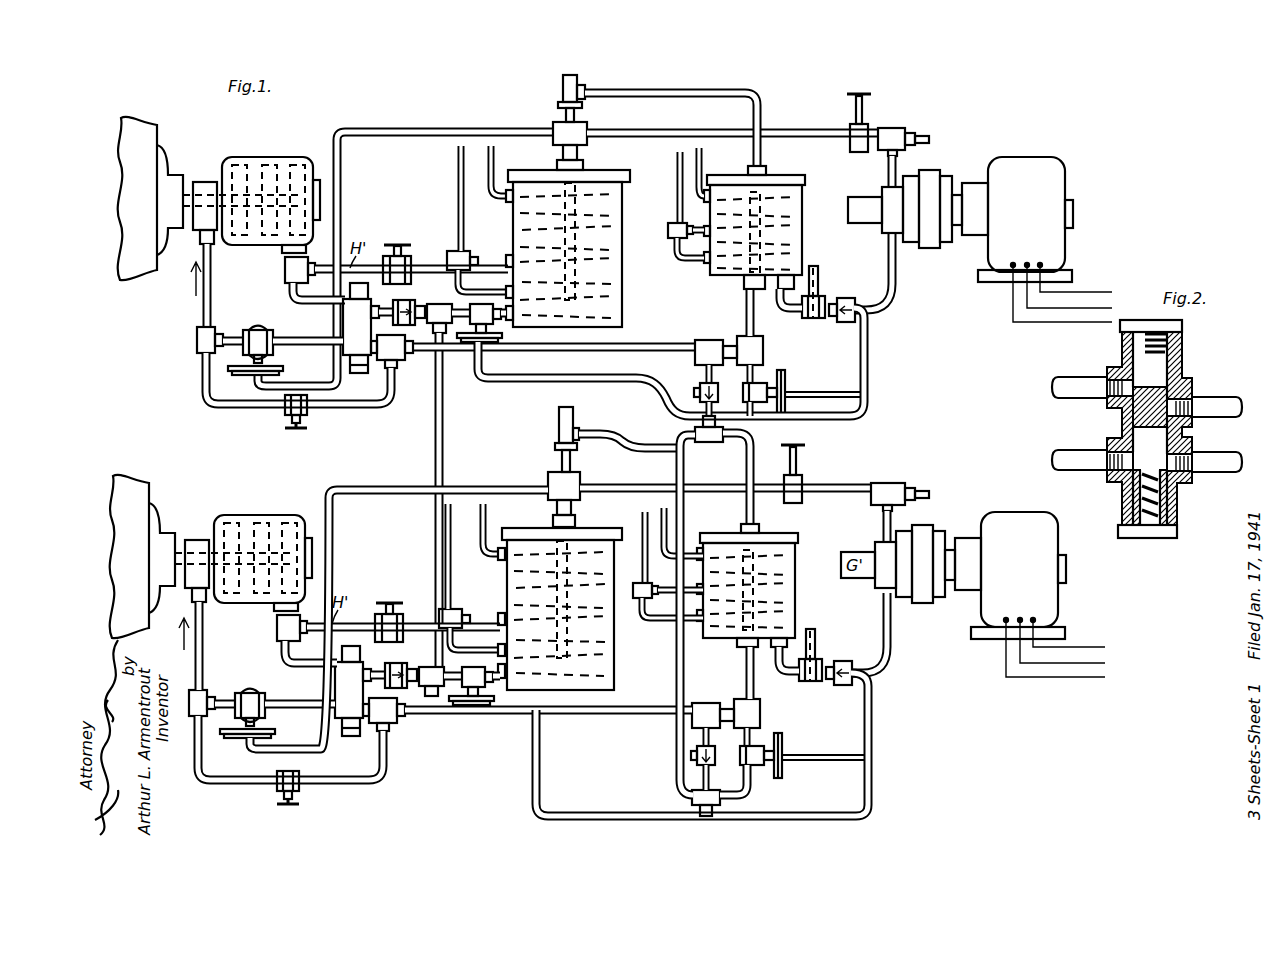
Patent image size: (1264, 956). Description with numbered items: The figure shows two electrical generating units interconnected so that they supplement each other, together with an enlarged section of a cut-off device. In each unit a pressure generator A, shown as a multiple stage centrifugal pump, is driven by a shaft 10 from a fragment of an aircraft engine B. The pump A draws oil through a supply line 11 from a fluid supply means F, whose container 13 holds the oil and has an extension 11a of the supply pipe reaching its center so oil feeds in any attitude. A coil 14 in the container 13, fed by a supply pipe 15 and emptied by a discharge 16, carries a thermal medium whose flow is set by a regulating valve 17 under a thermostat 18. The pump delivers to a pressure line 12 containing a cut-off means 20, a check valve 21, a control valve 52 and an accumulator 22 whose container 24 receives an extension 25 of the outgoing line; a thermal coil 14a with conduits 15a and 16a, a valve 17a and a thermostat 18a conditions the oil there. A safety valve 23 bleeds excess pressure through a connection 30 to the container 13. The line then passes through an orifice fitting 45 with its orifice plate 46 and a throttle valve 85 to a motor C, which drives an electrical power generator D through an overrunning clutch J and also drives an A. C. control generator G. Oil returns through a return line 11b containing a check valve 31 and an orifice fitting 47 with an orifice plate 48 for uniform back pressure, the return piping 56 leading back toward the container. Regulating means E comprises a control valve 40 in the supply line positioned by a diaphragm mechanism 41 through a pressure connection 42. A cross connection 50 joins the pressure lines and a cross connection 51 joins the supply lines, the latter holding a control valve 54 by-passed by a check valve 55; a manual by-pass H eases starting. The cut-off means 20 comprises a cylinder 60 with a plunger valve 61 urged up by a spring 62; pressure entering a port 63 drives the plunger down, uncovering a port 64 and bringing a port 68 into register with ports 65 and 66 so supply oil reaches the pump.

In FIG. 1, the shaft 10 is at (192, 192).
In FIG. 1, the supply line 11 is at (666, 346).
In FIG. 2, the supply line 11 is at (1087, 460).
In FIG. 1, the extension of supply pipe 11a is at (795, 255).
In FIG. 1, the return line 11b is at (892, 282).
In FIG. 1, the pressure line 12 is at (800, 138).
In FIG. 2, the pressure line 12 is at (1087, 387).
In FIG. 1, the container 13 is at (802, 222).
In FIG. 1, the coil 14 is at (770, 186).
In FIG. 1, the thermal coil 14a is at (512, 208).
In FIG. 1, the supply pipe 15 is at (676, 166).
In FIG. 1, the conduit 15a is at (458, 191).
In FIG. 1, the discharge 16 is at (703, 158).
In FIG. 1, the conduit 16a is at (497, 158).
In FIG. 1, the regulating valve 17 is at (669, 235).
In FIG. 1, the valve 17a is at (447, 262).
In FIG. 1, the thermostat 18 is at (704, 252).
In FIG. 1, the thermostat 18a is at (506, 258).
In FIG. 1, the cut-off means 20 is at (340, 324).
In FIG. 2, the cut-off means 20 is at (1194, 350).
In FIG. 1, the check valve 21 is at (420, 305).
In FIG. 1, the accumulator 22 is at (618, 297).
In FIG. 1, the safety valve 23 is at (580, 82).
In FIG. 1, the container 24 is at (567, 256).
In FIG. 1, the extension 25 is at (600, 214).
In FIG. 1, the connection 30 is at (692, 92).
In FIG. 1, the check valve 31 is at (846, 323).
In FIG. 1, the control valve 40 is at (260, 330).
In FIG. 1, the diaphragm mechanism 41 is at (283, 366).
In FIG. 1, the pressure connection 42 is at (410, 142).
In FIG. 1, the orifice fitting 45 is at (857, 152).
In FIG. 1, the orifice plate 46 is at (850, 128).
In FIG. 1, the orifice fitting 47 is at (813, 320).
In FIG. 1, the orifice plate 48 is at (783, 332).
In FIG. 1, the cross connection 50 is at (448, 420).
In FIG. 1, the cross connection 51 is at (686, 469).
In FIG. 1, the control valve 52 is at (500, 339).
In FIG. 1, the control valve 54 is at (774, 382).
In FIG. 1, the check valve 55 is at (698, 386).
In FIG. 1, the return pipe 56 is at (866, 358).
In FIG. 2, the cylinder 60 is at (1122, 346).
In FIG. 2, the plunger valve 61 is at (1168, 388).
In FIG. 2, the spring 62 is at (1176, 500).
In FIG. 2, the port 63 is at (1110, 398).
In FIG. 2, the port 64 is at (1194, 400).
In FIG. 2, the port 65 is at (1110, 470).
In FIG. 2, the port 66 is at (1194, 458).
In FIG. 2, the port 68 is at (1158, 440).
In FIG. 1, the throttle valve 85 is at (897, 130).
In FIG. 1, the pressure generator A is at (280, 151).
In FIG. 1, the engine B is at (155, 121).
In FIG. 1, the motor C is at (934, 256).
In FIG. 1, the electrical power generator D is at (1046, 158).
In FIG. 1, the regulating means E is at (247, 392).
In FIG. 1, the fluid supply means F is at (818, 194).
In FIG. 1, the A. C. control generator G is at (875, 210).
In FIG. 1, the manually controlled by-pass H is at (342, 417).
In FIG. 1, the overrunning clutch J is at (974, 176).